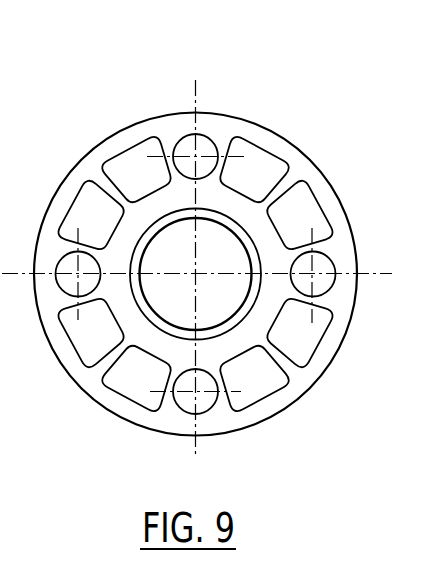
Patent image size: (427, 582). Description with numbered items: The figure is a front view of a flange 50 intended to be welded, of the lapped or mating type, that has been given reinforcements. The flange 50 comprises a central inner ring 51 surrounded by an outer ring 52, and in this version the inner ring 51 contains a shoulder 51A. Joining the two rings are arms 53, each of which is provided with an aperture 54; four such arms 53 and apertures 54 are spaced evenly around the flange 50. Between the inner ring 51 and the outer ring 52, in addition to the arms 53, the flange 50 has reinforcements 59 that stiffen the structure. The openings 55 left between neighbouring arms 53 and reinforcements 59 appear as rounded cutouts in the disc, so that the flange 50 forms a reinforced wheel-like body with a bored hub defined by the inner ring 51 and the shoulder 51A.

The flange 50 is at (259, 97).
The inner ring 51 is at (257, 250).
The shoulder 51A is at (277, 300).
The outer ring 52 is at (328, 198).
The arms 53 is at (222, 148).
The apertures 54 is at (181, 147).
The slot 55 is at (257, 170).
The reinforcements 59 is at (306, 156).